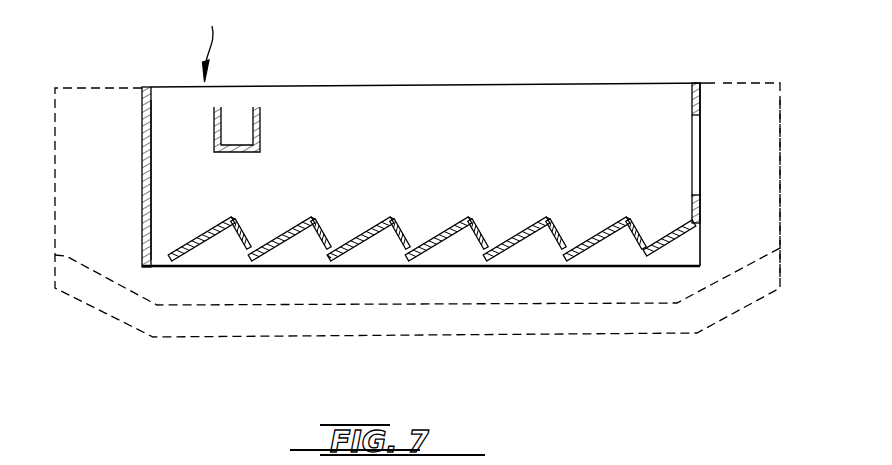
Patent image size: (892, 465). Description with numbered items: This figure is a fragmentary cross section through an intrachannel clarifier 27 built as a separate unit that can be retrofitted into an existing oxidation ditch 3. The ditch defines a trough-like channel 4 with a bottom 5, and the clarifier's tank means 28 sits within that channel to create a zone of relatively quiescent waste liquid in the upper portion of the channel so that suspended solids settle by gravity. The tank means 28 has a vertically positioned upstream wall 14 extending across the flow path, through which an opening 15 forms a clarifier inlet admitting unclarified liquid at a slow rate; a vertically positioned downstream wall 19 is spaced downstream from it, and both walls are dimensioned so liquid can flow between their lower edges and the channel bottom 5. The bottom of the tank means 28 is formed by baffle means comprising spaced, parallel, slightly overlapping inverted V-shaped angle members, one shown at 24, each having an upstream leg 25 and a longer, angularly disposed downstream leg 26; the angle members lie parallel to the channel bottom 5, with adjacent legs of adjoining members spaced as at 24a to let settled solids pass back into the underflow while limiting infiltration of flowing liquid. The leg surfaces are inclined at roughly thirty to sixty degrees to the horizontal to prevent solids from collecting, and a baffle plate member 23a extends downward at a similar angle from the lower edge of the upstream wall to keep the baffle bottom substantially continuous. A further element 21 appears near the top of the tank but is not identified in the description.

The oxidation ditch 3 is at (725, 82).
The channel 4 is at (753, 183).
The channel bottom 5 is at (758, 283).
The upstream wall 14 is at (701, 97).
The opening 15 is at (701, 141).
The downstream wall 19 is at (142, 143).
The channel member 21 is at (256, 107).
The baffle plate member 23a is at (672, 243).
The angle member 24 is at (233, 219).
The space between adjacent legs 24a is at (327, 258).
The upstream leg 25 is at (241, 228).
The downstream leg 26 is at (203, 236).
The intrachannel clarifier 27 is at (200, 51).
The tank means 28 is at (145, 90).